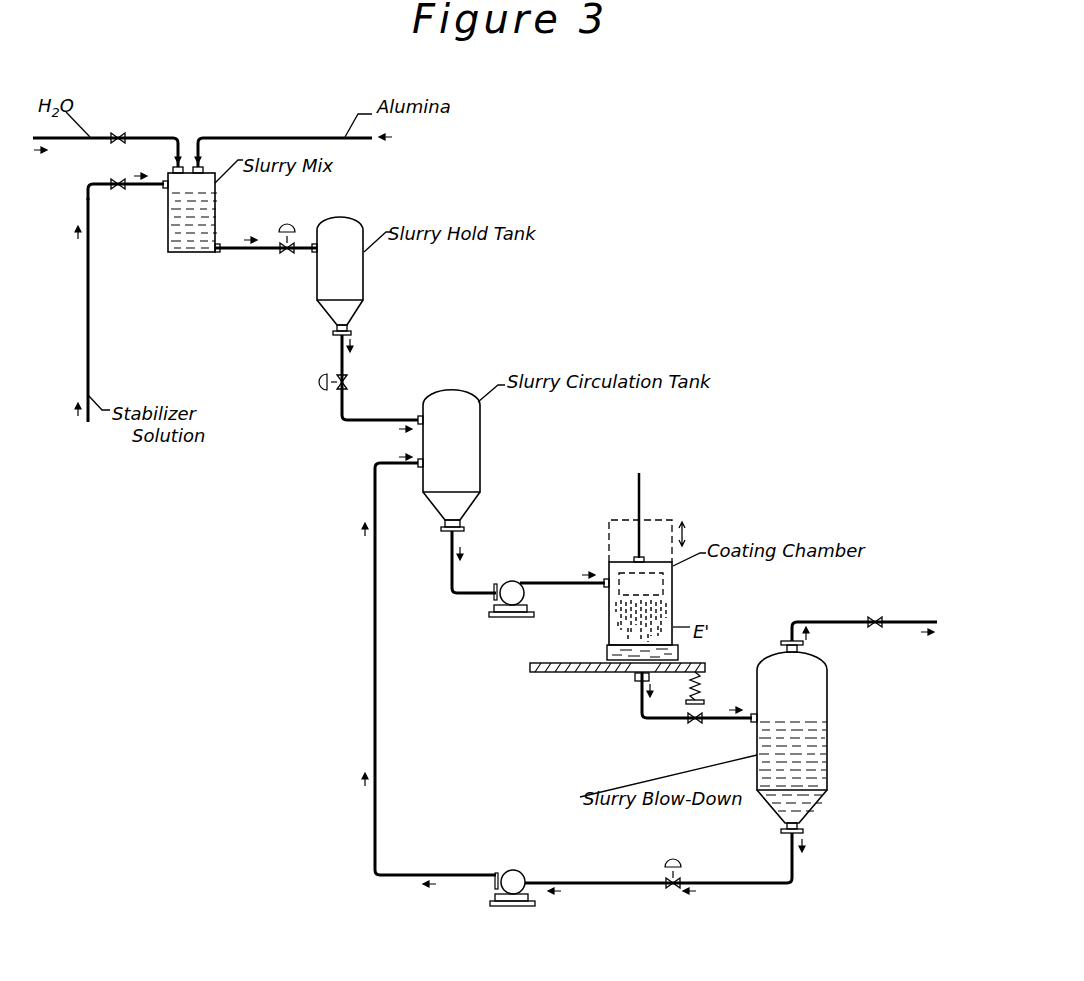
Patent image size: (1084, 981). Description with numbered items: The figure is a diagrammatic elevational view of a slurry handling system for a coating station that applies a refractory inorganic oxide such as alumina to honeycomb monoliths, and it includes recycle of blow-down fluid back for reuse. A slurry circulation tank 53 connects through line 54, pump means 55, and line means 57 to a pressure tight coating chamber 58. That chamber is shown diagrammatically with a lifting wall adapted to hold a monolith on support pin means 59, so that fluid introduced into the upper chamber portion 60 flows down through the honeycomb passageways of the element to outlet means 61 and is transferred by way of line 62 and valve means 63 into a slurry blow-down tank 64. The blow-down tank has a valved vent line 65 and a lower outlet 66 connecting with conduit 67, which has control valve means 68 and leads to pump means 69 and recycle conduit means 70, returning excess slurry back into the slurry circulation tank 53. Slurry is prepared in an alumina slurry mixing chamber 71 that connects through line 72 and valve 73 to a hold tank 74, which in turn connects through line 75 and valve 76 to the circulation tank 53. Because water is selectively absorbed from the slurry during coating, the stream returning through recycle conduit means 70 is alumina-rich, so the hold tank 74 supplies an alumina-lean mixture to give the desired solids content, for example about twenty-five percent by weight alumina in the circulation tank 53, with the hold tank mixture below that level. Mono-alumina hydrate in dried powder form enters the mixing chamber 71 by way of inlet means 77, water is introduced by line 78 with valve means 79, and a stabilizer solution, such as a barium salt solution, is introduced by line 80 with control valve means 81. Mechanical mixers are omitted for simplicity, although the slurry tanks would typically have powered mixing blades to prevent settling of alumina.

The slurry circulation tank 53 is at (481, 466).
The line 54 is at (455, 577).
The pump means 55 is at (498, 618).
The line means 57 is at (595, 590).
The pressure tight coating chamber 58 is at (674, 602).
The support pin means 59 is at (614, 641).
The upper chamber portion 60 is at (622, 574).
The outlet means 61 is at (637, 673).
The line 62 is at (640, 720).
The valve means 63 is at (695, 724).
The slurry blow-down tank 64 is at (828, 736).
The valved vent line 65 is at (810, 622).
The lower outlet 66 is at (812, 808).
The conduit 67 is at (726, 886).
The control valve means 68 is at (673, 865).
The pump means 69 is at (504, 904).
The recycle conduit means 70 is at (372, 565).
The alumina slurry mixing chamber 71 is at (172, 256).
The line 72 is at (248, 254).
The valve 73 is at (287, 230).
The hold tank 74 is at (365, 287).
The line 75 is at (340, 352).
The valve 76 is at (348, 389).
The inlet means 77 is at (250, 138).
The line 78 is at (140, 138).
The valve means 79 is at (118, 148).
The line 80 is at (88, 362).
The control valve means 81 is at (118, 191).